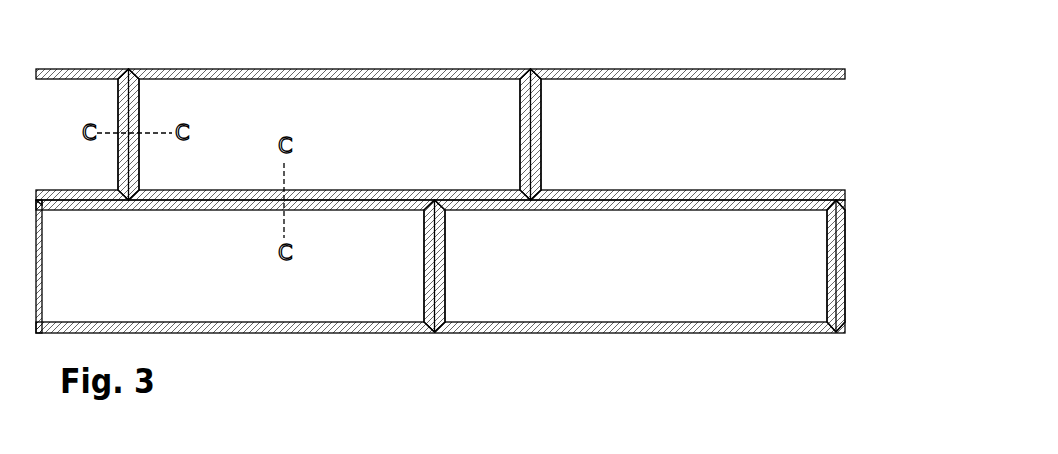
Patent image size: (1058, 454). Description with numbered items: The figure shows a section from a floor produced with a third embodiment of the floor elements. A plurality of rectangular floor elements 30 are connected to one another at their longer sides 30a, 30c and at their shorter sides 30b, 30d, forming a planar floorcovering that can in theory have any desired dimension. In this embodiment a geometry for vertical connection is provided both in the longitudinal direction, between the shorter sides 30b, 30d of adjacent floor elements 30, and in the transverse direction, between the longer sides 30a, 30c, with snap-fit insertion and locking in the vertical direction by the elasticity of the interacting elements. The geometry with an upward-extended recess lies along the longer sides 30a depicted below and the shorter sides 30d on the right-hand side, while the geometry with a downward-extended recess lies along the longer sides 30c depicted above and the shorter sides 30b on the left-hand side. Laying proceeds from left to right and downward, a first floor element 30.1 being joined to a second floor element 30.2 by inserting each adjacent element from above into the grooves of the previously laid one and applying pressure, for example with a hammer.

The floor element 30 is at (440, 203).
The first floor element 30.1 is at (440, 115).
The second floor element 30.2 is at (440, 258).
The longer side 30a is at (378, 190).
The shorter side 30b is at (140, 121).
The longer side 30c is at (356, 69).
The shorter side 30d is at (520, 138).